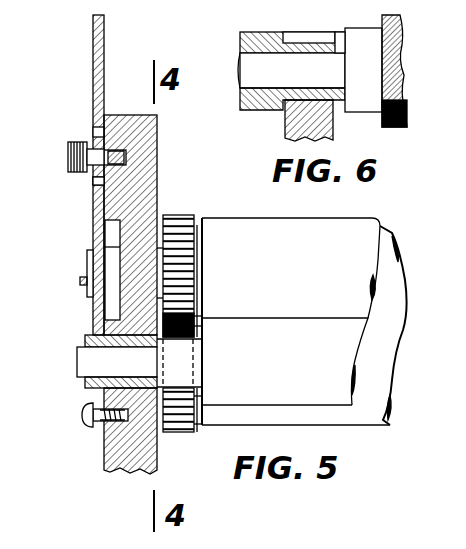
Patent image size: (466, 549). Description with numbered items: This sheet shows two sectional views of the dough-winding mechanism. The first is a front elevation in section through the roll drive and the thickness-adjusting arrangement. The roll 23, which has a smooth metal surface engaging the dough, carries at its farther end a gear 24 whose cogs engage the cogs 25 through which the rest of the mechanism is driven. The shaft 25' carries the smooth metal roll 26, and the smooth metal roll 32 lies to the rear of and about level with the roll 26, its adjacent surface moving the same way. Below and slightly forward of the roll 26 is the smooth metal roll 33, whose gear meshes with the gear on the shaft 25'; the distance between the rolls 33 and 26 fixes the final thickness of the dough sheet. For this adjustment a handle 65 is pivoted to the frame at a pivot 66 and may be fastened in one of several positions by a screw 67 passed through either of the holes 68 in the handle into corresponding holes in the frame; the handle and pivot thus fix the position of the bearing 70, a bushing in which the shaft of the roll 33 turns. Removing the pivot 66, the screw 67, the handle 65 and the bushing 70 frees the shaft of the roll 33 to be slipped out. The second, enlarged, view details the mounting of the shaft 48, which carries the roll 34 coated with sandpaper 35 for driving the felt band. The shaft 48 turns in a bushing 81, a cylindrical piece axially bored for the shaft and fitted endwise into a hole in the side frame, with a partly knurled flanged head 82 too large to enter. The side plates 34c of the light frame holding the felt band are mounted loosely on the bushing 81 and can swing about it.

In FIG. 5, the handle 65 is at (93, 70).
In FIG. 5, the screw 67 is at (68, 160).
In FIG. 5, the holes 68 is at (97, 183).
In FIG. 5, the bearing 70 is at (100, 388).
In FIG. 5, the pivot 66 is at (87, 418).
In FIG. 5, the shaft 25' is at (121, 221).
In FIG. 5, the cogs 25 is at (187, 261).
In FIG. 5, the gear 24 is at (180, 432).
In FIG. 5, the smooth metal roll 26 is at (291, 321).
In FIG. 5, the roll 33 is at (285, 361).
In FIG. 5, the roll 23 is at (372, 425).
In FIG. 5, the smooth metal roll 32 is at (392, 233).
In FIG. 6, the flanged heads 82 is at (248, 30).
In FIG. 6, the shaft 48 is at (292, 70).
In FIG. 6, the bushing 81 is at (300, 101).
In FIG. 6, the roll 34 is at (363, 70).
In FIG. 6, the side plates 34c is at (340, 30).
In FIG. 6, the sandpaper 35 is at (390, 127).